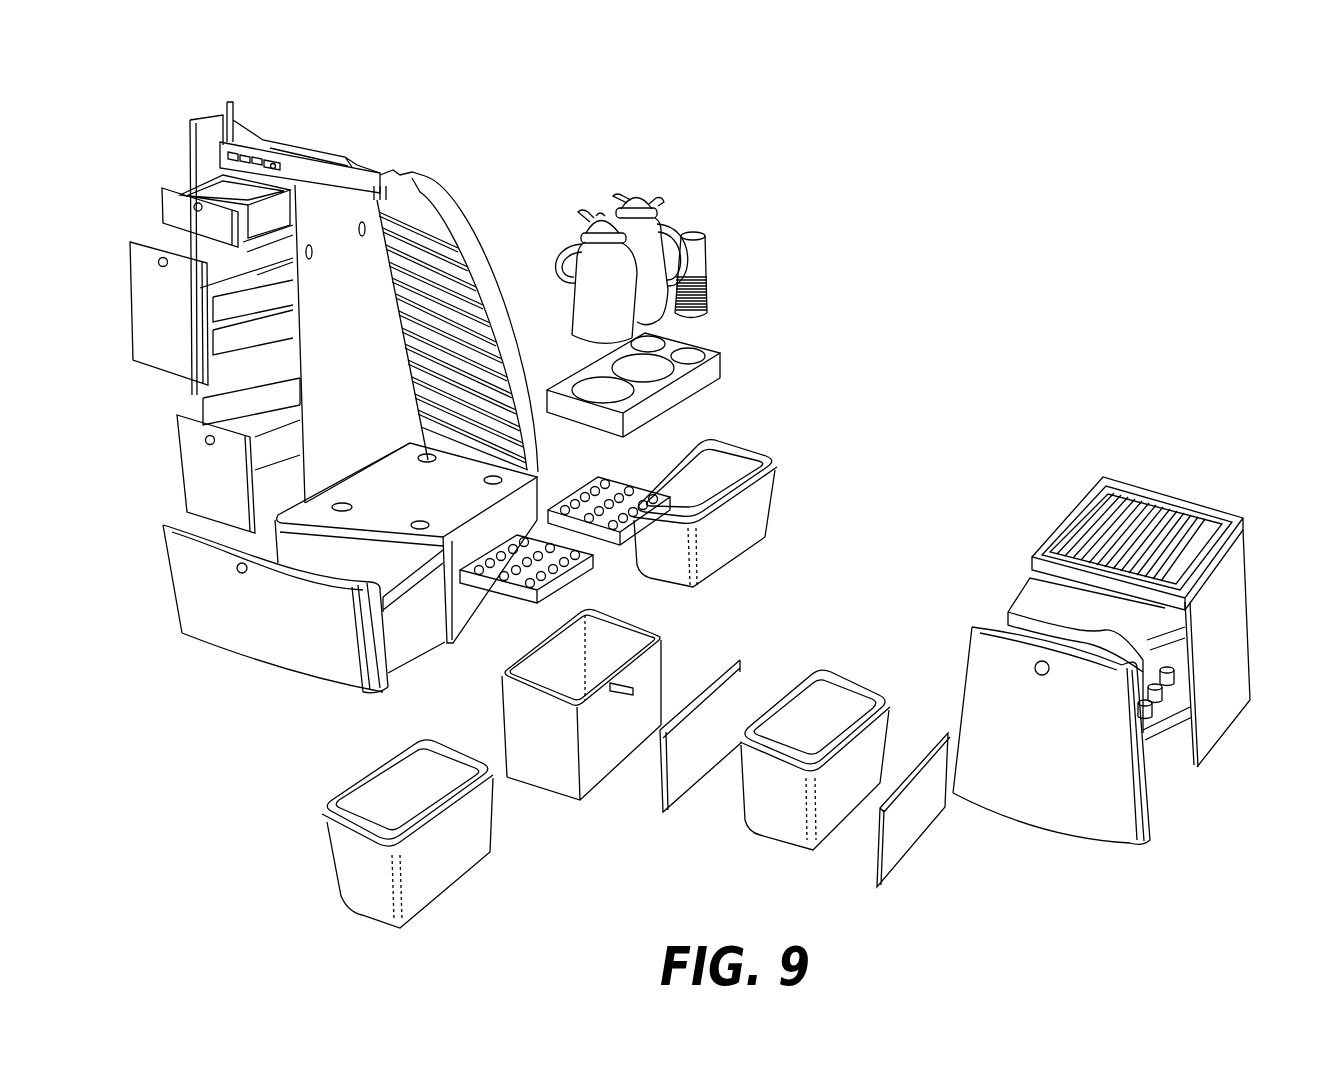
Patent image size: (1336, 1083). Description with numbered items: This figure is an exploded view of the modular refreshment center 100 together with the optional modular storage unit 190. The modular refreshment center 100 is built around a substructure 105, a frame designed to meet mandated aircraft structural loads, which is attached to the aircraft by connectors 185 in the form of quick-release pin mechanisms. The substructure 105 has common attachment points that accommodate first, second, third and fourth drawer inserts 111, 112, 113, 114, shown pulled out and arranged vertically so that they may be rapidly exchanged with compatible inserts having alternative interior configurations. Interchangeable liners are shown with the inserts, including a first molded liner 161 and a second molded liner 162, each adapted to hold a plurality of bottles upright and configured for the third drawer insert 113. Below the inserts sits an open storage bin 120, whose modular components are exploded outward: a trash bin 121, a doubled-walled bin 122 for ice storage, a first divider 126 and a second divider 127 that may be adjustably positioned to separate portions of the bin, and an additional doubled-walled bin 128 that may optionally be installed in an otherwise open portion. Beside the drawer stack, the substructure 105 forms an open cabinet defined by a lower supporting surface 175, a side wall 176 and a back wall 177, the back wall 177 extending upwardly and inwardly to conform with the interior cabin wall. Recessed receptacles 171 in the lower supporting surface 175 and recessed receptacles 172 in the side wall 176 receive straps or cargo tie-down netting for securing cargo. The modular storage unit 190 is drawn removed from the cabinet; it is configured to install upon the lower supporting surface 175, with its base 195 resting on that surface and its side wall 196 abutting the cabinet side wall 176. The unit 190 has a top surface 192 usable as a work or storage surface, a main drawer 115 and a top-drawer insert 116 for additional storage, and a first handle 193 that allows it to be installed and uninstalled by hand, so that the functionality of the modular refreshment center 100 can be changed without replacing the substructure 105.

The modular refreshment center 100 is at (1172, 150).
The substructure 105 is at (450, 208).
The first drawer insert 111 is at (170, 190).
The second drawer insert 112 is at (145, 260).
The third drawer insert 113 is at (190, 400).
The fourth drawer insert 114 is at (187, 480).
The main drawer 115 is at (1155, 763).
The top-drawer insert 116 is at (1160, 643).
The open storage bin 120 is at (213, 620).
The trash bin 121 is at (657, 637).
The doubled-walled bin 122 is at (860, 683).
The first divider 126 is at (742, 655).
The second divider 127 is at (900, 858).
The additional doubled-walled bin 128 is at (463, 877).
The first molded liner 161 is at (527, 602).
The second molded liner 162 is at (578, 488).
The recessed receptacles 171 is at (333, 502).
The recessed receptacles 172 is at (312, 260).
The lower supporting surface 175 is at (431, 504).
The side wall 176 is at (376, 398).
The back wall 177 is at (488, 409).
The connectors 185 is at (380, 165).
The modular storage unit 190 is at (1099, 413).
The top surface 192 is at (1150, 500).
The first handle 193 is at (760, 500).
The base 195 is at (720, 370).
The side wall 196 is at (1048, 505).